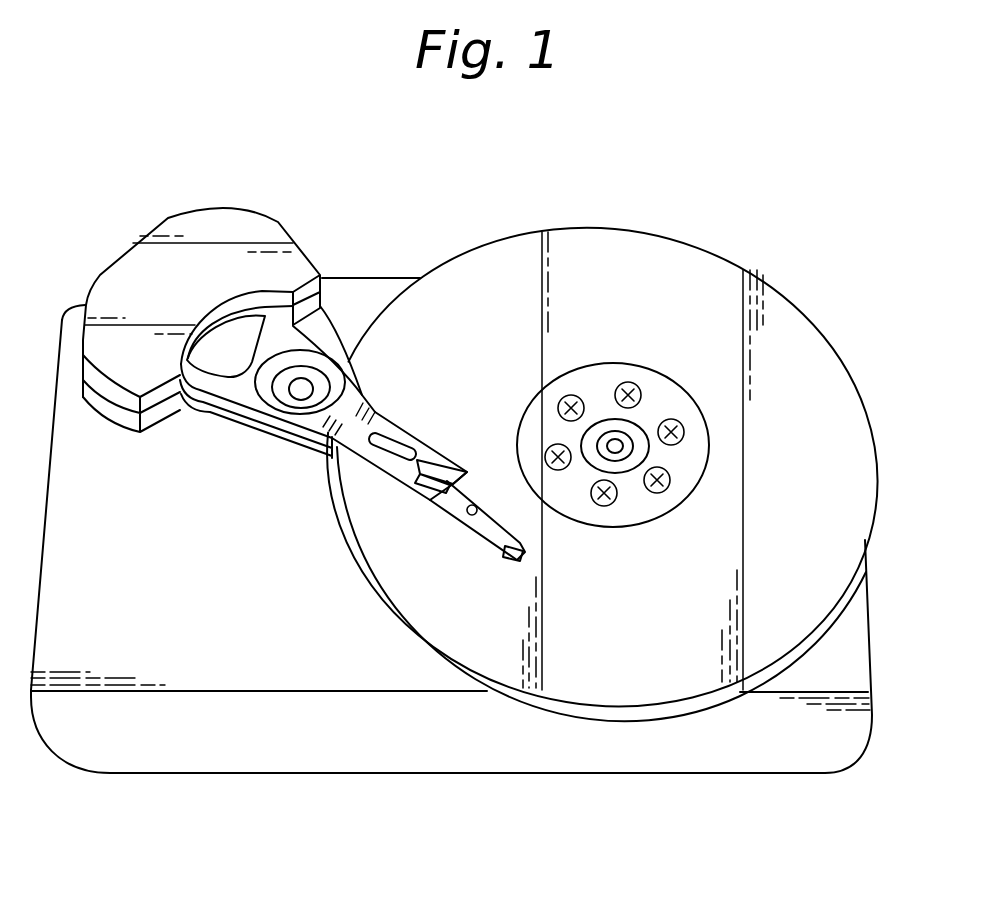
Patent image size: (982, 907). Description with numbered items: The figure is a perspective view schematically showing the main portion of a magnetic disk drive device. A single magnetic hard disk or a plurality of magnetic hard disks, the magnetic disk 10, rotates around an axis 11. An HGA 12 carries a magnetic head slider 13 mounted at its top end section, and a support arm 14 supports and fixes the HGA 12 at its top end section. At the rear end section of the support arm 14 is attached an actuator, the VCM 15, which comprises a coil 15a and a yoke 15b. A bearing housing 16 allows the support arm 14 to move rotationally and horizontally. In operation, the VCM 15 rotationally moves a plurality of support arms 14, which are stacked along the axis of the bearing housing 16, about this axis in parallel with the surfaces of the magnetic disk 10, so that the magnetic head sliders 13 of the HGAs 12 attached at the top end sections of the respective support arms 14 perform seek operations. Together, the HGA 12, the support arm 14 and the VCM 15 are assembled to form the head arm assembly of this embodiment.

The magnetic hard disk 10 is at (841, 320).
The axis 11 is at (627, 443).
The HGA 12 is at (483, 523).
The magnetic head slider 13 is at (497, 553).
The support arm 14 is at (375, 405).
The VCM 15 is at (221, 390).
The coil 15a is at (197, 372).
The yoke 15b is at (138, 368).
The bearing housing 16 is at (303, 388).